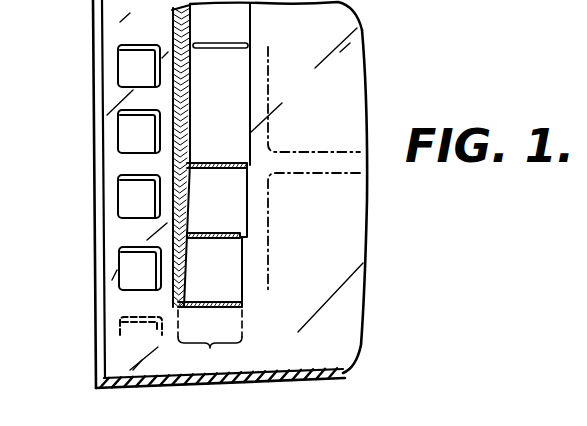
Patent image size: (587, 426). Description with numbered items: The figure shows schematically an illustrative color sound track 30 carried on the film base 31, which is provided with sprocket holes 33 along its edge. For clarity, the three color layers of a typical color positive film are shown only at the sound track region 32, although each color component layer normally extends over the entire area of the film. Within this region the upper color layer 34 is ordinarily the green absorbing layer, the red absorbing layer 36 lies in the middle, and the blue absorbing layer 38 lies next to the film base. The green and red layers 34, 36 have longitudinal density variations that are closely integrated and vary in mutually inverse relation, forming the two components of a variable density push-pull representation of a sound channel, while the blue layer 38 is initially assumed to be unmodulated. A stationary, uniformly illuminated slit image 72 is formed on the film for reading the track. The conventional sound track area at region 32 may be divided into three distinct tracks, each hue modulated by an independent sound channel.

The sound track 30 is at (92, 283).
The film base 31 is at (347, 234).
The sound track region 32 is at (210, 348).
The sprocket holes 33 is at (127, 190).
The upper color layer 34 is at (238, 212).
The red absorbing layer 36 is at (234, 100).
The blue absorbing layer 38 is at (218, 267).
The slit image 72 is at (229, 43).